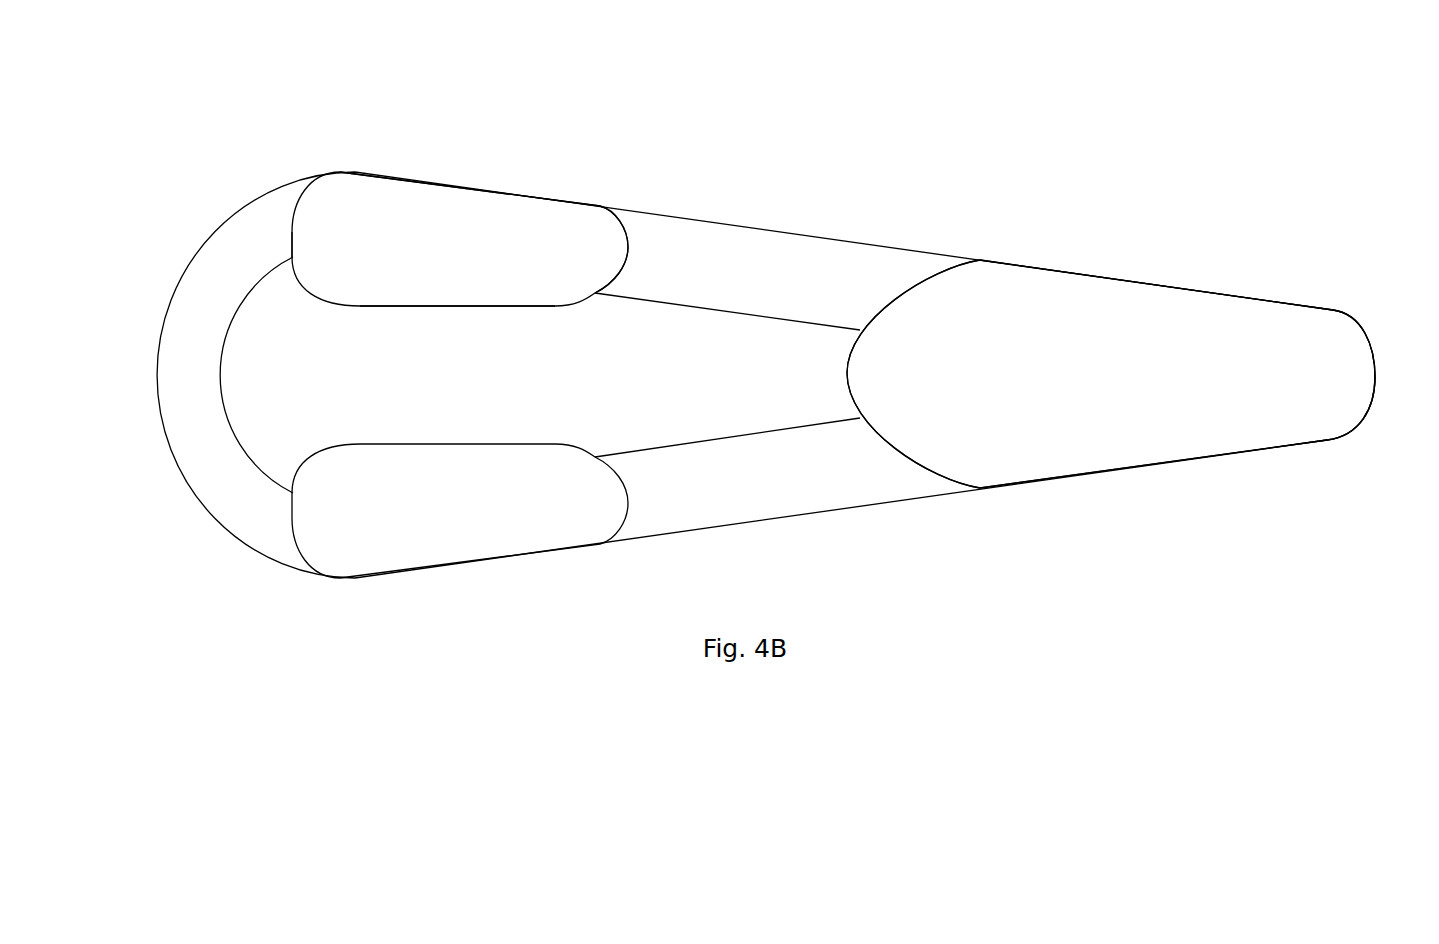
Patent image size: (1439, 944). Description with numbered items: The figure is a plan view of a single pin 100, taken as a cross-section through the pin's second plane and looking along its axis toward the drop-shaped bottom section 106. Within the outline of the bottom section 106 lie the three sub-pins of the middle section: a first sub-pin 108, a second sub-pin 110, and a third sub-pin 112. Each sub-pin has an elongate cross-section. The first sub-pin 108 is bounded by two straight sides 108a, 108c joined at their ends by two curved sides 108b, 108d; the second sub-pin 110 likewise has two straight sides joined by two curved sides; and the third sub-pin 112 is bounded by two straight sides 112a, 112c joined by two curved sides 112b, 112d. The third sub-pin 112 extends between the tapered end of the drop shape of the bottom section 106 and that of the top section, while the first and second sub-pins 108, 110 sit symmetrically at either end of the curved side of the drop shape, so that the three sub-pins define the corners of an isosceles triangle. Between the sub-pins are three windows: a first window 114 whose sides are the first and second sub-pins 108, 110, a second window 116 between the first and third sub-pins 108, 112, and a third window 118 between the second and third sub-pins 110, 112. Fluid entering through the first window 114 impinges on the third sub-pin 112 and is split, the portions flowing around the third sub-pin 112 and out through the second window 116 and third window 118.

The pin 100 is at (973, 107).
The bottom section 106 is at (549, 383).
The first sub-pin 108 is at (421, 253).
The straight side 108a is at (488, 186).
The curved side 108b is at (292, 231).
The straight side 108c is at (424, 310).
The curved side 108d is at (632, 250).
The second sub-pin 110 is at (414, 515).
The third sub-pin 112 is at (1051, 383).
The straight side 112a is at (1130, 280).
The curved side 112b is at (846, 373).
The straight side 112c is at (1145, 468).
The curved side 112d is at (1373, 358).
The first window 114 is at (287, 362).
The second window 116 is at (782, 277).
The third window 118 is at (772, 490).